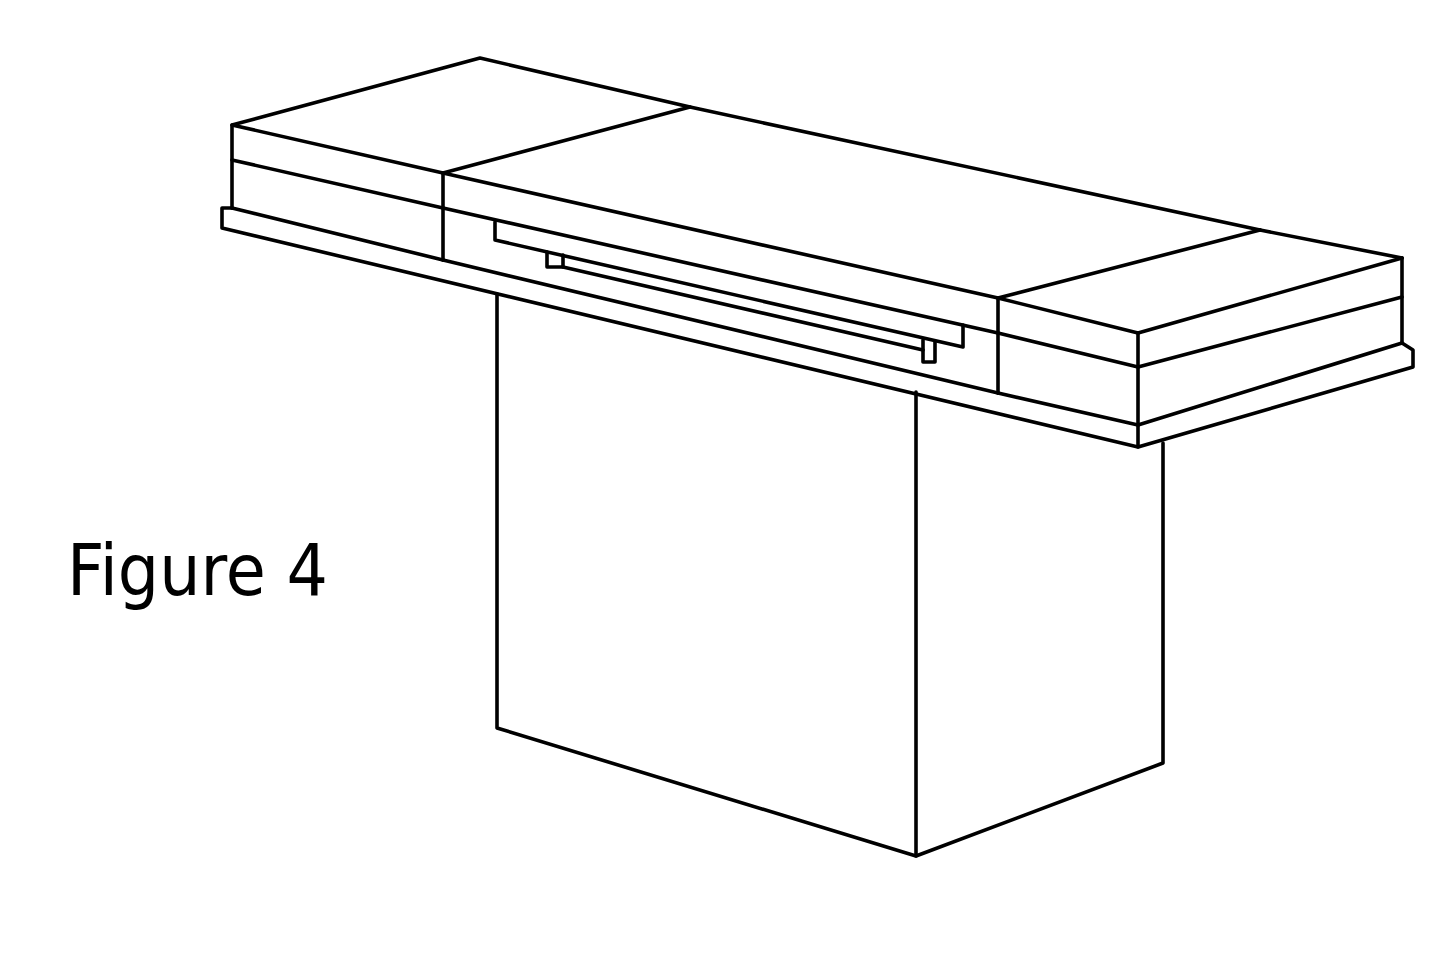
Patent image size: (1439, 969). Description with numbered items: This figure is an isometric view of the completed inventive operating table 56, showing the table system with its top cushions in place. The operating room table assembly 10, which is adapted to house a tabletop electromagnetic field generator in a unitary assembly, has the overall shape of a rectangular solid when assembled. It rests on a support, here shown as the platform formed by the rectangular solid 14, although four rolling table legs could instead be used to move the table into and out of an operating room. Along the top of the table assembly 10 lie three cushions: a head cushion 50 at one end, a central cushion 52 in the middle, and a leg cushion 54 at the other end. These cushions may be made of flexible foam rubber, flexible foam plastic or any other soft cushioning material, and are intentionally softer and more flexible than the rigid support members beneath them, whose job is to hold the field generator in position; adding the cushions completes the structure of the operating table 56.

The operating room table assembly 10 is at (893, 575).
The rectangular solid 14 is at (1097, 432).
The head cushion 50 is at (1285, 268).
The central cushion 52 is at (927, 178).
The leg cushion 54 is at (603, 105).
The operating table 56 is at (829, 303).